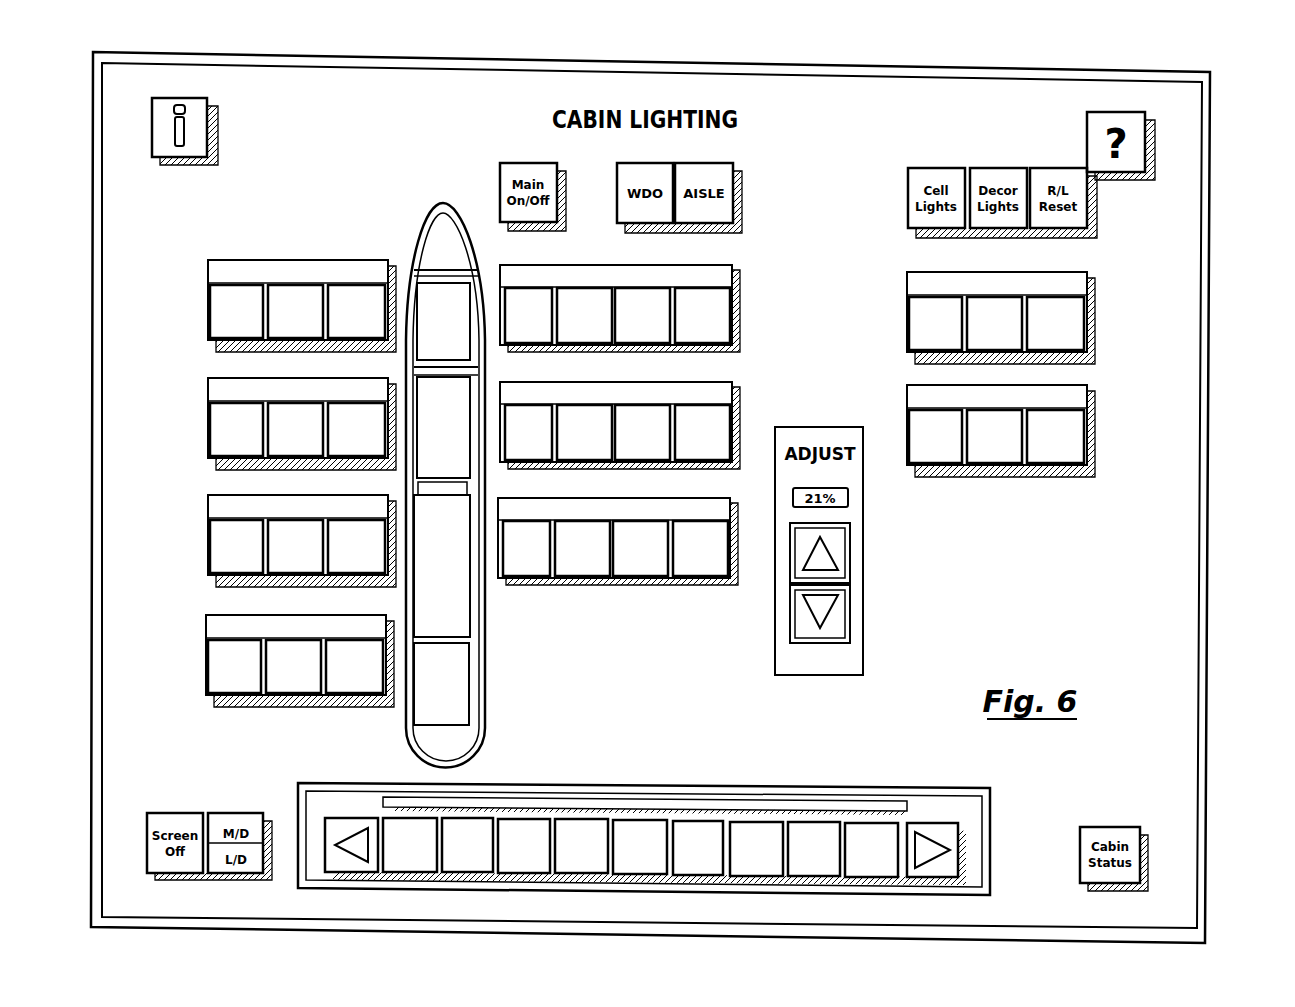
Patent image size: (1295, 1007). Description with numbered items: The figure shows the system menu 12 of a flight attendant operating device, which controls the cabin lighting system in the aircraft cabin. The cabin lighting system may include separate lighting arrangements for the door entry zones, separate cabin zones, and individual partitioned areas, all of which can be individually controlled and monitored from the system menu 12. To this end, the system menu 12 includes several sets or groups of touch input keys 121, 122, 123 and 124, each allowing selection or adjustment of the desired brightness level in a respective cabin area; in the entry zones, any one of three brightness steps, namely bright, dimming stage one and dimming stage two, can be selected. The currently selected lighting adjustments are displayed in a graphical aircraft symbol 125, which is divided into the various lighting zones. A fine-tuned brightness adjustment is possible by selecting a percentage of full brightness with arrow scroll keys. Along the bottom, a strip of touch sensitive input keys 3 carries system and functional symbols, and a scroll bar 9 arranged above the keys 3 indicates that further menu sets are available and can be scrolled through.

The system menu 12 is at (676, 497).
The set of touch input keys 121 is at (1050, 374).
The set of touch input keys 122 is at (665, 425).
The set of touch input keys 123 is at (253, 601).
The set of touch input keys 124 is at (250, 365).
The graphical aircraft symbol 125 is at (486, 485).
The scroll bar 9 is at (645, 782).
The touch sensitive input keys 3 is at (645, 870).